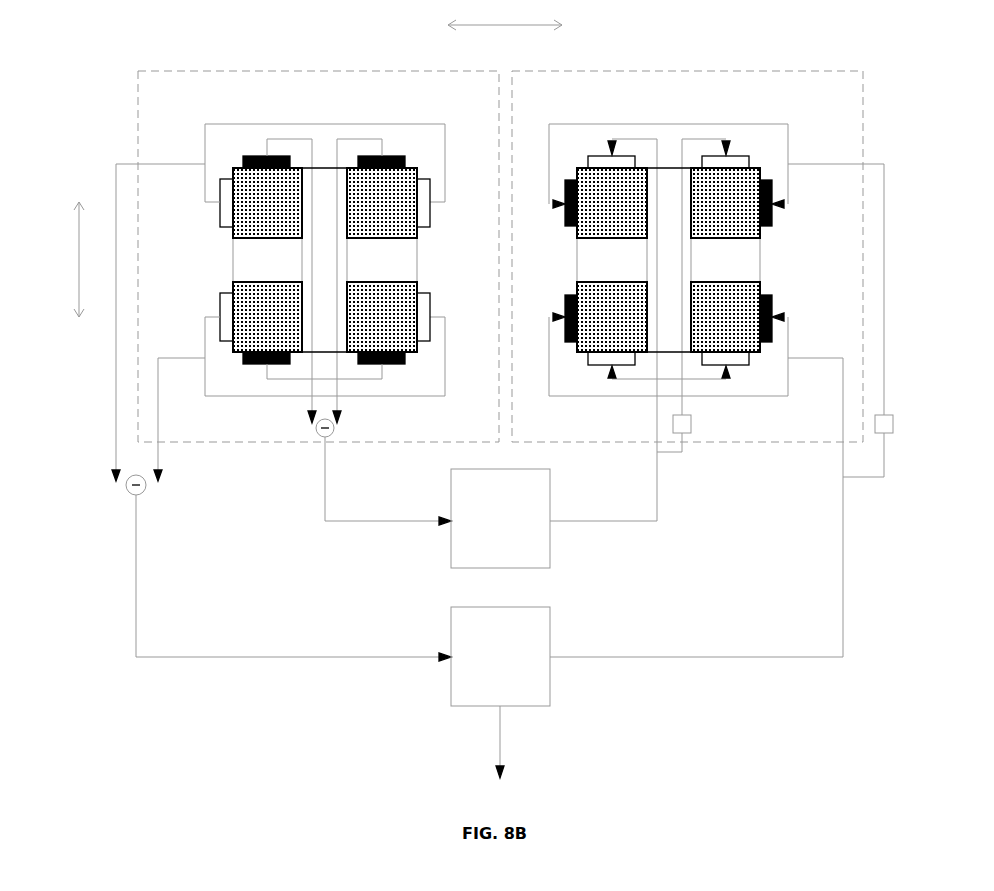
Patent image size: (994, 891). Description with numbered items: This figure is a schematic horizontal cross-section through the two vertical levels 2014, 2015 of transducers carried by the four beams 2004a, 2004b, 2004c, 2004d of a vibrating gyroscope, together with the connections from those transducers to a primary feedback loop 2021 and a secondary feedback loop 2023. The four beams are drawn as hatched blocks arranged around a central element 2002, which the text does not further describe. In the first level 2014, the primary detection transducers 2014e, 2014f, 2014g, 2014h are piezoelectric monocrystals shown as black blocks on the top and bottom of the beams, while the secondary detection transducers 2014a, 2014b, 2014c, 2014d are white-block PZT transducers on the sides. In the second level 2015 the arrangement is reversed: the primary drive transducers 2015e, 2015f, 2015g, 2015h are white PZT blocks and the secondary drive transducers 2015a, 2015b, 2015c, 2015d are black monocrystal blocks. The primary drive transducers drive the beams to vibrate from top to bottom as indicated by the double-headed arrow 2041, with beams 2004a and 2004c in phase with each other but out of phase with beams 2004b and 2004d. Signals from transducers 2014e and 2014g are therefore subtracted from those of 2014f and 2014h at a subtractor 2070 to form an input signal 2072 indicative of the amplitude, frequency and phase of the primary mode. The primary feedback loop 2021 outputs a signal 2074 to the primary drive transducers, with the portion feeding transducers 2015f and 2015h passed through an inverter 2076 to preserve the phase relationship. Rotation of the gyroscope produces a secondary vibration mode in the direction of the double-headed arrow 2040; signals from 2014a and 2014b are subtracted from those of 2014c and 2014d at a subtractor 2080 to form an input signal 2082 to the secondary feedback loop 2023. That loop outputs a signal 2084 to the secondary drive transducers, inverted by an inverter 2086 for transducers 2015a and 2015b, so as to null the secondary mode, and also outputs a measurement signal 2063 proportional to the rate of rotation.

The central electrode / common structure 2002 is at (325, 168).
The beam 2004a is at (233, 238).
The beam 2004b is at (417, 238).
The beam 2004c is at (233, 283).
The beam 2004d is at (417, 283).
The vertical level of transducers 2014 is at (236, 72).
The secondary detection transducer 2014a is at (220, 217).
The secondary detection transducer 2014b is at (430, 217).
The secondary detection transducer 2014c is at (220, 300).
The secondary detection transducer 2014d is at (430, 300).
The primary detection transducer 2014e is at (243, 160).
The primary detection transducer 2014f is at (405, 160).
The primary detection transducer 2014g is at (258, 365).
The primary detection transducer 2014h is at (390, 365).
The vertical level of transducers 2015 is at (626, 72).
The secondary drive transducer 2015a is at (565, 192).
The secondary drive transducer 2015b is at (772, 192).
The secondary drive transducer 2015c is at (565, 325).
The secondary drive transducer 2015d is at (772, 325).
The primary drive transducer 2015e is at (590, 156).
The primary drive transducer 2015f is at (748, 156).
The primary drive transducer 2015g is at (600, 365).
The primary drive transducer 2015h is at (735, 365).
The primary feedback loop 2021 is at (451, 545).
The secondary feedback loop 2023 is at (451, 685).
The double-headed arrow 2040 is at (488, 25).
The double-headed arrow 2041 is at (79, 237).
The measurement signal 2063 is at (500, 735).
The subtractor 2070 is at (318, 436).
The input signal 2072 is at (342, 521).
The signal 2074 is at (582, 521).
The inverter 2076 is at (691, 423).
The subtractor 2080 is at (146, 485).
The input signal 2082 is at (270, 657).
The signal 2084 is at (610, 657).
The inverter 2086 is at (875, 432).